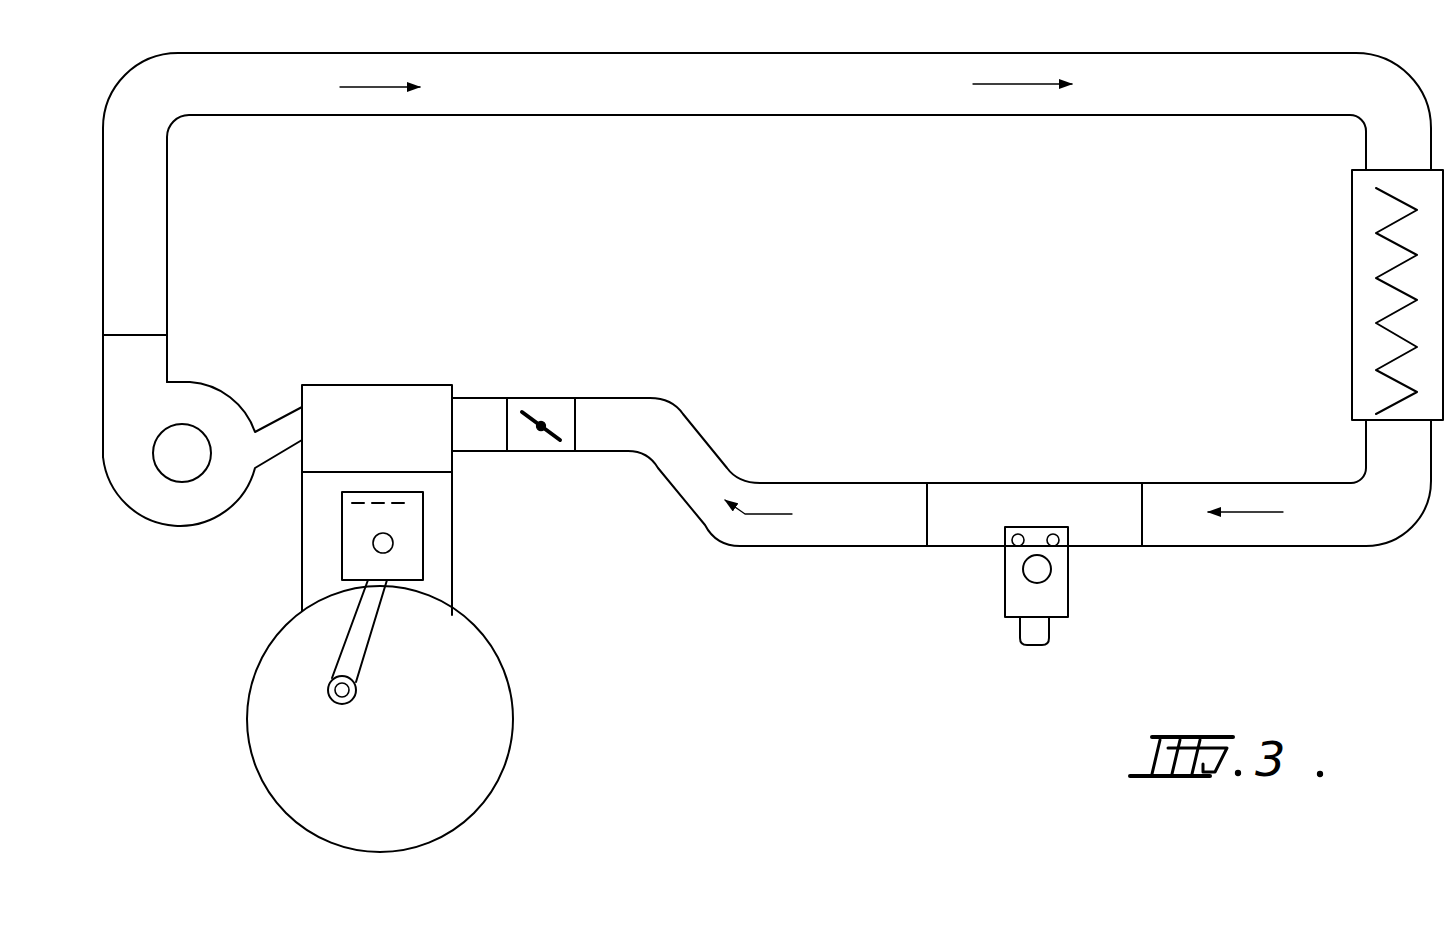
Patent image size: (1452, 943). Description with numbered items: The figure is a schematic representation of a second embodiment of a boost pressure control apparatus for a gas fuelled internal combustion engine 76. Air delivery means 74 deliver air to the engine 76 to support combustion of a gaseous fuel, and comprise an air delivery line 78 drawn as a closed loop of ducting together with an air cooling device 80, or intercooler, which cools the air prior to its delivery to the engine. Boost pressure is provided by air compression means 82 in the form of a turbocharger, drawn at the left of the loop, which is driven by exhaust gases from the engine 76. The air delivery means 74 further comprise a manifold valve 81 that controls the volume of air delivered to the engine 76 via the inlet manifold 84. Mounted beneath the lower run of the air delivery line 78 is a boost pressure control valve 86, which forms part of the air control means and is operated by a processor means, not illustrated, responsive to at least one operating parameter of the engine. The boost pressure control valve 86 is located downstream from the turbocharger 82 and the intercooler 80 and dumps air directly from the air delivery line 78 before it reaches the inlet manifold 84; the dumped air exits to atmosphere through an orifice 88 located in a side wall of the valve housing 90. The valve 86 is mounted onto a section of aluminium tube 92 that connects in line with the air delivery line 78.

The air delivery means 74 is at (540, 138).
The gas fuelled internal combustion engine 76 is at (455, 595).
The air delivery line 78 is at (1168, 93).
The air cooling device 80 is at (1353, 223).
The manifold valve 81 is at (543, 417).
The air compression means 82 is at (198, 527).
The inlet manifold 84 is at (478, 423).
The boost pressure control valve 86 is at (996, 606).
The orifice 88 is at (1045, 570).
The valve housing 90 is at (1077, 617).
The section of aluminium tube 92 is at (967, 490).